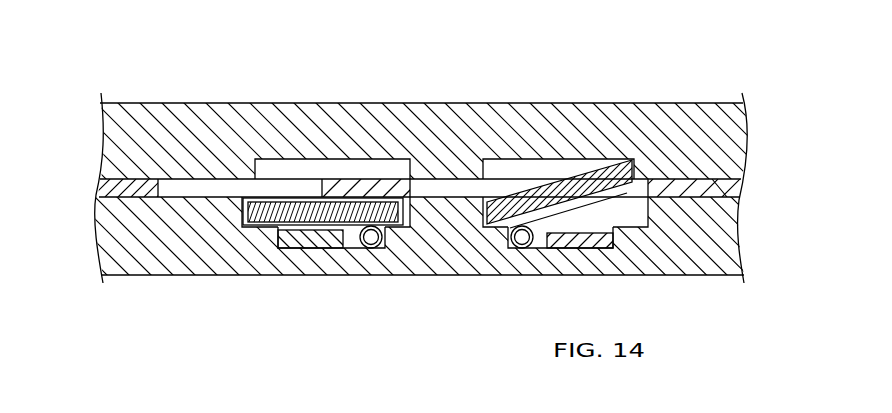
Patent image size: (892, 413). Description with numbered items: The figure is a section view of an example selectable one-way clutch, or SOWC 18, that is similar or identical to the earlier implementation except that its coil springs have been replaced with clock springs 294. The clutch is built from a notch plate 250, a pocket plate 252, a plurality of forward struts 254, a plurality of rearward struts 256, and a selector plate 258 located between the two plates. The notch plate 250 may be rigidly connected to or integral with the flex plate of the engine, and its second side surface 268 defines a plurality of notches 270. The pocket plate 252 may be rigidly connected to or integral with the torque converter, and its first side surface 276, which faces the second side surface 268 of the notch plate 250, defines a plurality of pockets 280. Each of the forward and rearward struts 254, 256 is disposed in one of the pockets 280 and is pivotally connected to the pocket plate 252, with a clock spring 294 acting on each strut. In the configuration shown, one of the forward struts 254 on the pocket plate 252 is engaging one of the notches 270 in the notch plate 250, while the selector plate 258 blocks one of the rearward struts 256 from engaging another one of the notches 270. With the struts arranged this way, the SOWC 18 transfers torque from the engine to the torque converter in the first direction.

The selectable one-way clutch (SOWC) 18 is at (439, 184).
The notch plate 250 is at (745, 128).
The pocket plate 252 is at (727, 251).
The forward strut 254 is at (578, 170).
The rearward strut 256 is at (302, 195).
The selector plate 258 is at (725, 190).
The second side surface 268 is at (168, 180).
The notches 270 is at (545, 157).
The first side surface 276 is at (243, 200).
The pockets 280 is at (265, 227).
The clock springs 294 is at (386, 234).